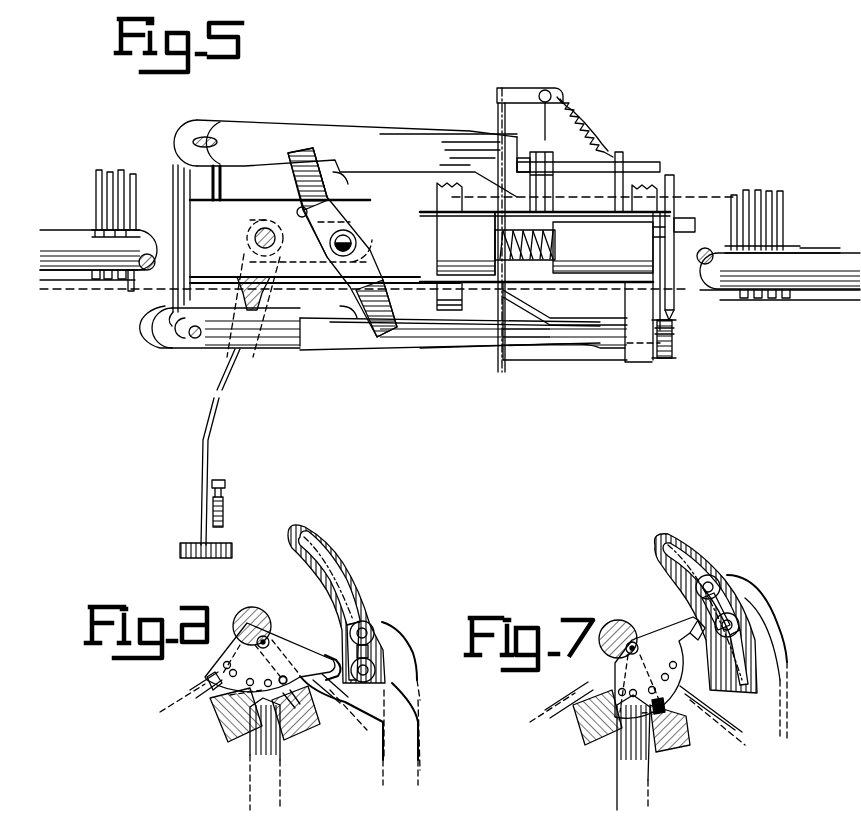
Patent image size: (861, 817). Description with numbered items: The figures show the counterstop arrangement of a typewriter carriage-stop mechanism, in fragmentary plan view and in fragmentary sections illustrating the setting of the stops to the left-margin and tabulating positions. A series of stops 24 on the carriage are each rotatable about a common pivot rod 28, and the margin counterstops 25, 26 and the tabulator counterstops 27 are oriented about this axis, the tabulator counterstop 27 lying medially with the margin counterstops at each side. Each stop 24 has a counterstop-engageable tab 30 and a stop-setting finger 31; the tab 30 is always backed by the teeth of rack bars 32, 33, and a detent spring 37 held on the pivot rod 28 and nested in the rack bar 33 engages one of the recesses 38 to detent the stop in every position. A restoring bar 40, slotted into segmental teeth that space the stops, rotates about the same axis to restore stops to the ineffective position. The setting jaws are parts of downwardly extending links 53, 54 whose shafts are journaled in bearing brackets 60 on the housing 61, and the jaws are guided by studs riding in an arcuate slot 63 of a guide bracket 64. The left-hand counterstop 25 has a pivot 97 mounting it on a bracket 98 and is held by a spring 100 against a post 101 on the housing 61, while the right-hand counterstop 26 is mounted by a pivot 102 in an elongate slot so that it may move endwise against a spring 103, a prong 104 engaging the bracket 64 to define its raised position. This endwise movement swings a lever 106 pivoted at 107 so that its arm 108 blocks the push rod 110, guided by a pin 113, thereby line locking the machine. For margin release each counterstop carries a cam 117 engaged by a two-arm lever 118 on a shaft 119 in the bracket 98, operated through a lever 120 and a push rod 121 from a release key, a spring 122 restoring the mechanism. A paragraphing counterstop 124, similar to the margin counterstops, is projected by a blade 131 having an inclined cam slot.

In FIG. 5, the stops 24 is at (123, 170).
In FIG. 6, the stops 24 is at (288, 650).
In FIG. 7, the stops 24 is at (656, 660).
In FIG. 5, the left-hand margin counterstop 25 is at (400, 346).
In FIG. 6, the left-hand margin counterstop 25 is at (196, 690).
In FIG. 7, the left-hand margin counterstop 25 is at (563, 700).
In FIG. 5, the right-hand margin counterstop 26 is at (390, 144).
In FIG. 6, the right-hand margin counterstop 26 is at (337, 708).
In FIG. 7, the right-hand margin counterstop 26 is at (712, 703).
In FIG. 5, the tabulator counterstops 27 is at (498, 249).
In FIG. 6, the tabulator counterstops 27 is at (252, 780).
In FIG. 7, the tabulator counterstops 27 is at (618, 792).
In FIG. 7, the pivot rod 28 is at (639, 649).
In FIG. 6, the counterstop-engageable tab 30 is at (208, 700).
In FIG. 6, the stop-setting finger 31 is at (334, 660).
In FIG. 6, the rack bar 32 is at (228, 726).
In FIG. 6, the rack bar 33 is at (288, 738).
In FIG. 6, the detent spring 37 is at (254, 656).
In FIG. 6, the recesses 38 is at (285, 678).
In FIG. 5, the restoring bar 40 is at (95, 271).
In FIG. 6, the restoring bar 40 is at (264, 613).
In FIG. 7, the restoring bar 40 is at (624, 604).
In FIG. 6, the link 53 is at (392, 640).
In FIG. 7, the link 53 is at (738, 657).
In FIG. 6, the link 54 is at (418, 708).
In FIG. 5, the bearing brackets 60 is at (442, 208).
In FIG. 5, the housing 61 is at (604, 208).
In FIG. 6, the arcuate slot 63 is at (325, 560).
In FIG. 7, the arcuate slot 63 is at (706, 613).
In FIG. 6, the guide bracket 64 is at (357, 580).
In FIG. 5, the pivot 97 is at (193, 340).
In FIG. 5, the bracket 98 is at (217, 221).
In FIG. 5, the spring 100 is at (672, 338).
In FIG. 5, the post 101 is at (636, 305).
In FIG. 5, the pivot 102 is at (206, 136).
In FIG. 5, the spring 103 is at (592, 146).
In FIG. 5, the prong 104 is at (532, 96).
In FIG. 5, the lever 106 is at (578, 180).
In FIG. 5, the pivot 107 is at (521, 230).
In FIG. 5, the arm 108 is at (648, 167).
In FIG. 5, the push rod 110 is at (672, 193).
In FIG. 5, the pin 113 is at (687, 224).
In FIG. 5, the cam 117 is at (348, 245).
In FIG. 5, the two-arm lever 118 is at (368, 258).
In FIG. 5, the shaft 119 is at (351, 241).
In FIG. 5, the lever 120 is at (294, 220).
In FIG. 5, the push rod 121 is at (214, 414).
In FIG. 5, the spring 122 is at (226, 508).
In FIG. 5, the paragraphing counterstop 124 is at (152, 334).
In FIG. 5, the blade 131 is at (556, 248).